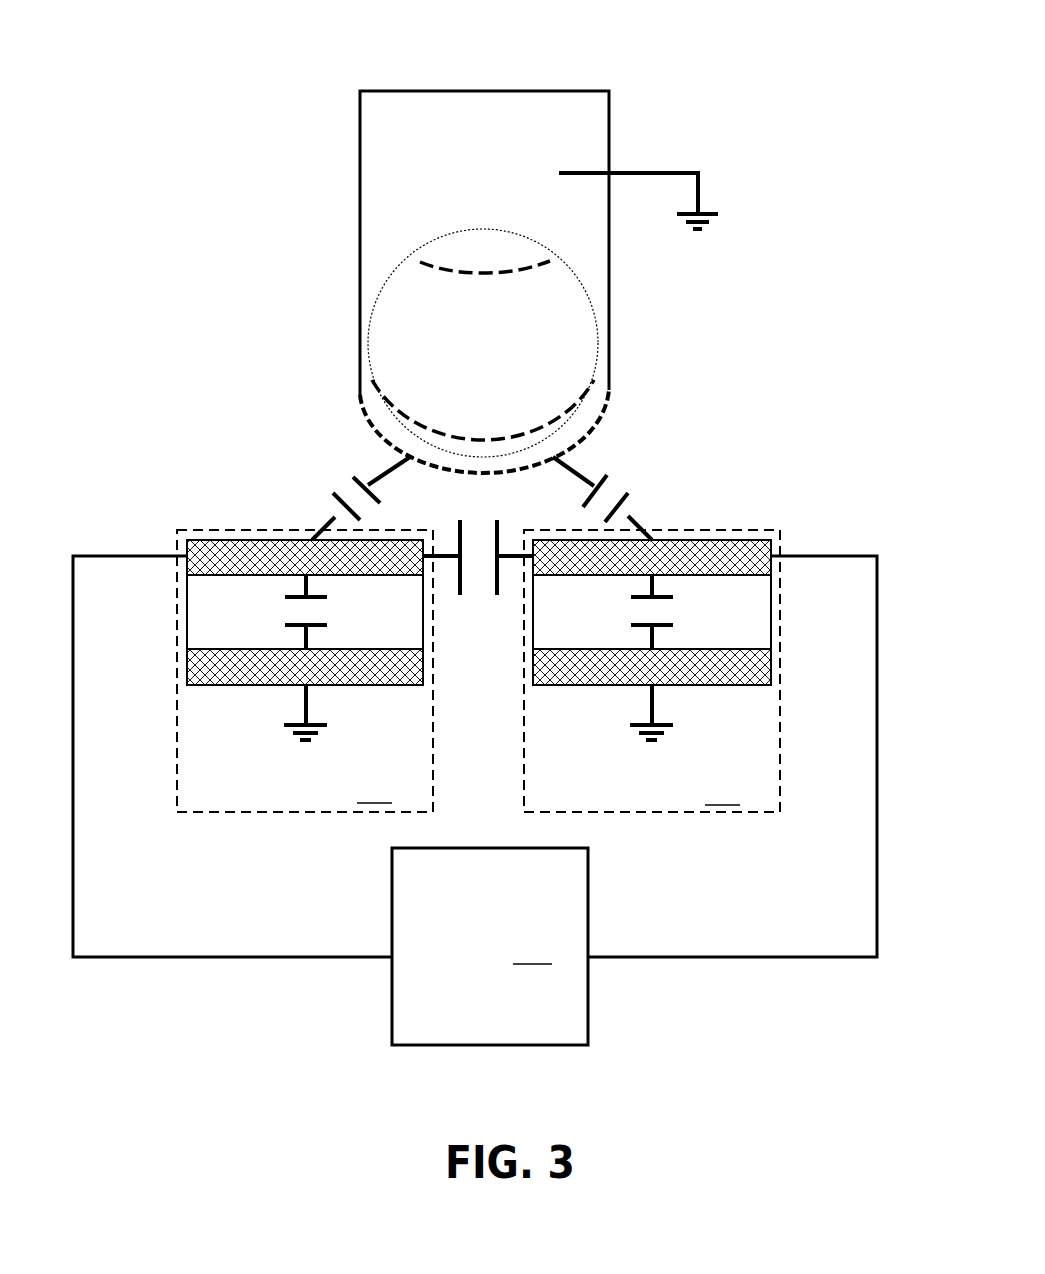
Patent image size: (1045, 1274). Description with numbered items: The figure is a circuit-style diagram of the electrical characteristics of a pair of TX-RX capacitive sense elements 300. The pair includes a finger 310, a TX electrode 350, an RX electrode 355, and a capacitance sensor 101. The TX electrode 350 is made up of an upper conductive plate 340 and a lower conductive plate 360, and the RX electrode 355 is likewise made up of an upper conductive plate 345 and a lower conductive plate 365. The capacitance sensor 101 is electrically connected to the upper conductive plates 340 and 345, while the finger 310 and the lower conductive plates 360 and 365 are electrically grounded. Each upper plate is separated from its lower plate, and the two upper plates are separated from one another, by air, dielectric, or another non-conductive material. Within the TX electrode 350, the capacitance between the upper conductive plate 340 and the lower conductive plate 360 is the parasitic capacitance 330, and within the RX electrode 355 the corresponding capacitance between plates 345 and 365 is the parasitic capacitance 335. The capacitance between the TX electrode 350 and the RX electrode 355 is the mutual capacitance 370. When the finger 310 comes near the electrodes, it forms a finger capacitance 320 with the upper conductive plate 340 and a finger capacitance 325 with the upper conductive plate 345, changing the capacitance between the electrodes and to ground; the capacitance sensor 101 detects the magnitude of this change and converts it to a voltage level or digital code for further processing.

The pair of TX-RX capacitive sense elements 300 is at (632, 60).
The finger 310 is at (498, 201).
The finger capacitance C_F 320 is at (357, 482).
The finger capacitance C_F 325 is at (603, 482).
The parasitic capacitance C_P 330 is at (285, 625).
The parasitic capacitance C_P 335 is at (672, 625).
The upper conductive plate 340 is at (239, 540).
The upper conductive plate 345 is at (700, 540).
The TX electrode 350 is at (305, 671).
The RX electrode 355 is at (652, 671).
The lower conductive plate 360 is at (187, 685).
The lower conductive plate 365 is at (771, 685).
The mutual capacitance C_M 370 is at (497, 594).
The capacitance sensor 101 is at (490, 946).